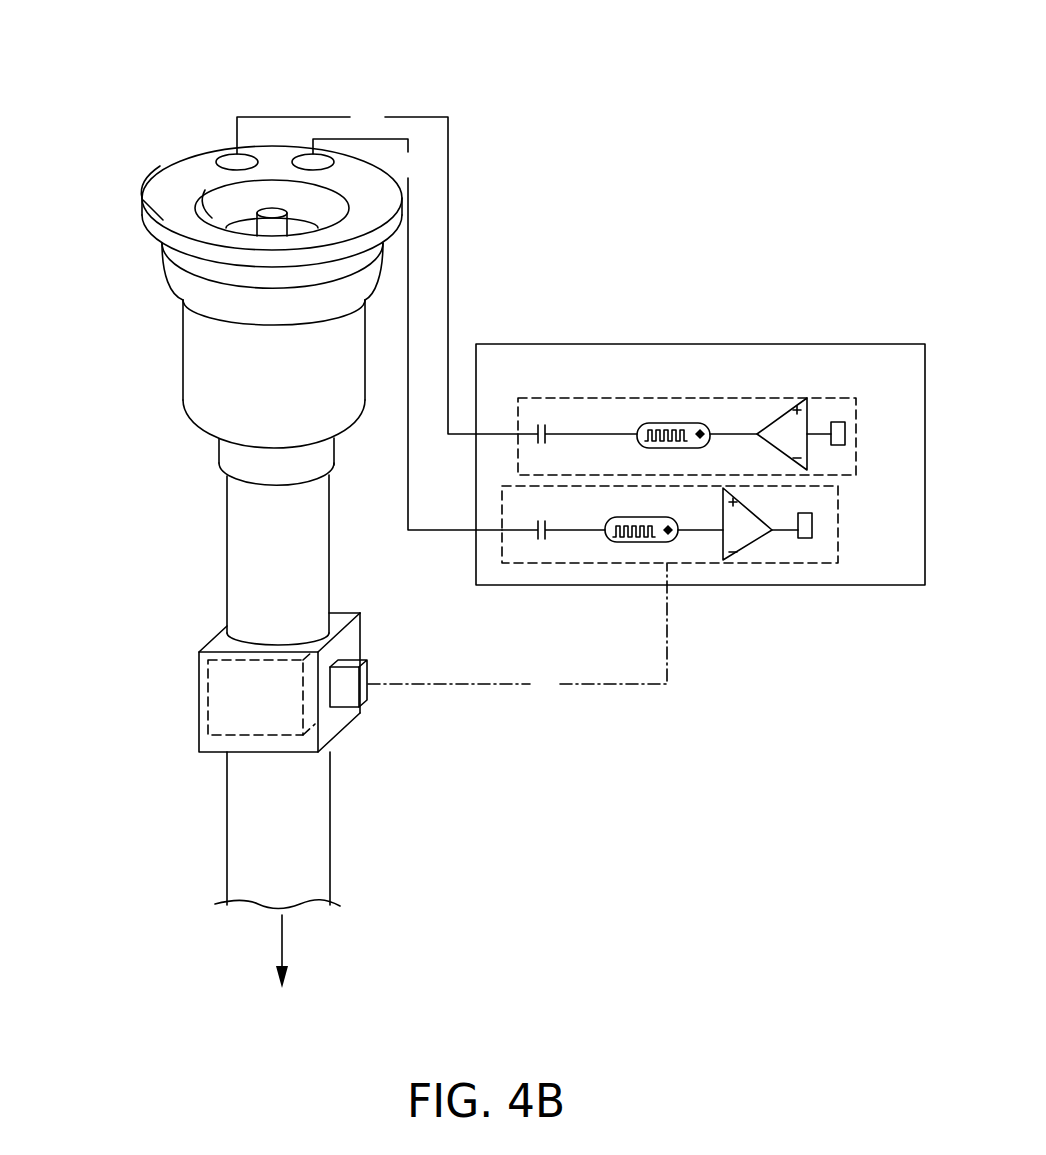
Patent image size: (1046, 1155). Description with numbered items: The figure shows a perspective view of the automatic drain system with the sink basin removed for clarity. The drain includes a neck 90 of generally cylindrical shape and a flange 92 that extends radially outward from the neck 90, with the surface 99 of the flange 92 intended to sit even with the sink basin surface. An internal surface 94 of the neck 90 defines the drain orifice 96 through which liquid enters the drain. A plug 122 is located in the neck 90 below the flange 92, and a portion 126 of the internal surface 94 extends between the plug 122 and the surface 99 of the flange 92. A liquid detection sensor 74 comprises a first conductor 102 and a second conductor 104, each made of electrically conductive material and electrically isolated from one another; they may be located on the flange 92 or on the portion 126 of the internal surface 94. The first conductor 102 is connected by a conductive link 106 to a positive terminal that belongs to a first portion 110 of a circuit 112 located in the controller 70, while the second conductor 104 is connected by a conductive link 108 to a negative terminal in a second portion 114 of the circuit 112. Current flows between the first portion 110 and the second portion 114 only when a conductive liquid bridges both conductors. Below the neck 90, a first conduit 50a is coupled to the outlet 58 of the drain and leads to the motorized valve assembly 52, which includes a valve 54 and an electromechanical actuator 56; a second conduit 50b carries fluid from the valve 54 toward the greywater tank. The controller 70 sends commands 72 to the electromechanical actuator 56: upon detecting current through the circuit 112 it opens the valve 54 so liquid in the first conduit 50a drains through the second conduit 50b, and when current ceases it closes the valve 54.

The first conduit 50a is at (255, 532).
The second conduit 50b is at (252, 793).
The motorized valve assembly 52 is at (152, 661).
The valve 54 is at (270, 690).
The electromechanical actuator 56 is at (363, 672).
The outlet 58 is at (262, 450).
The controller 70 is at (891, 504).
The commands 72 is at (517, 630).
The liquid detection sensor 74 is at (253, 62).
The neck 90 is at (138, 228).
The flange 92 is at (142, 197).
The internal surface 94 is at (212, 196).
The drain orifice 96 is at (212, 182).
The surface 99 is at (359, 204).
The first conductor 102 is at (243, 158).
The second conductor 104 is at (300, 158).
The conductive link 106 is at (377, 269).
The conductive link 108 is at (407, 334).
The first portion 110 is at (732, 375).
The circuit 112 is at (868, 378).
The second portion 114 is at (782, 563).
The plug 122 is at (247, 227).
The portion 126 is at (297, 218).